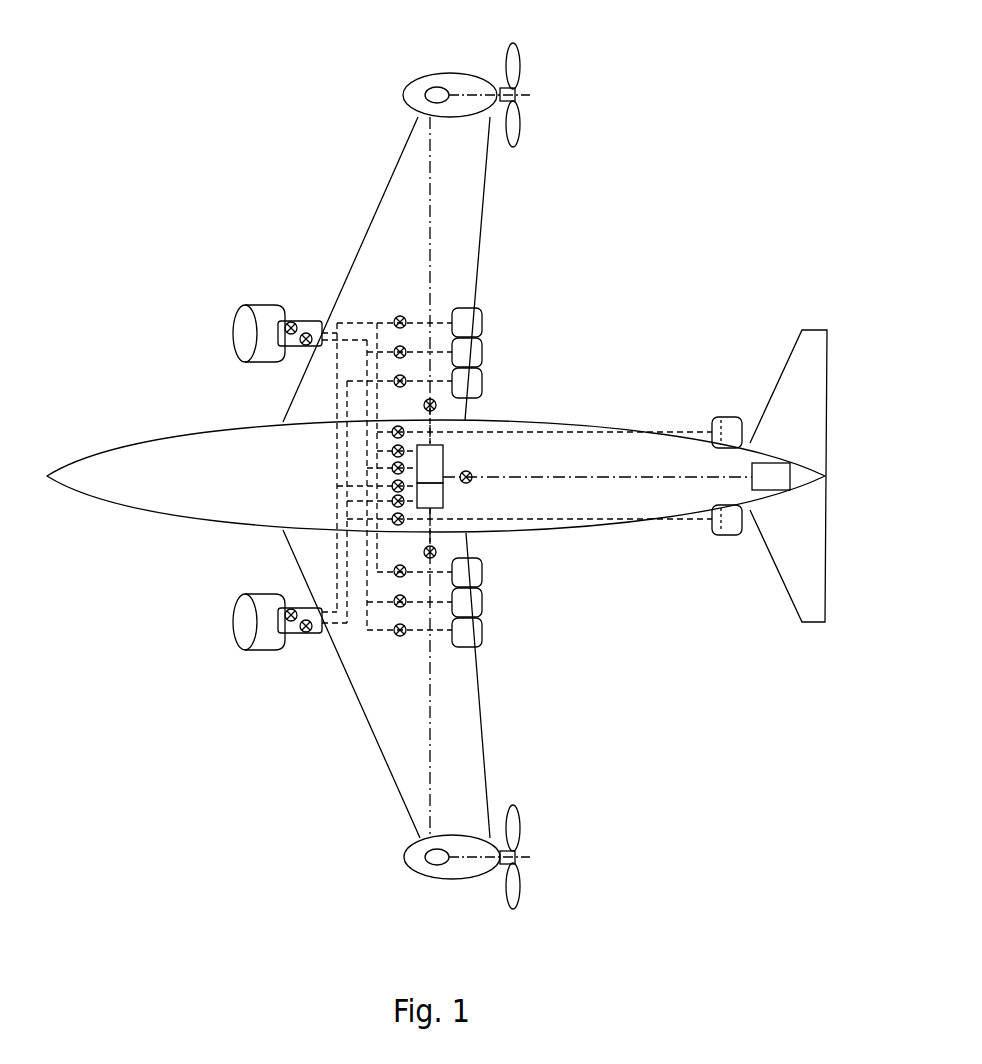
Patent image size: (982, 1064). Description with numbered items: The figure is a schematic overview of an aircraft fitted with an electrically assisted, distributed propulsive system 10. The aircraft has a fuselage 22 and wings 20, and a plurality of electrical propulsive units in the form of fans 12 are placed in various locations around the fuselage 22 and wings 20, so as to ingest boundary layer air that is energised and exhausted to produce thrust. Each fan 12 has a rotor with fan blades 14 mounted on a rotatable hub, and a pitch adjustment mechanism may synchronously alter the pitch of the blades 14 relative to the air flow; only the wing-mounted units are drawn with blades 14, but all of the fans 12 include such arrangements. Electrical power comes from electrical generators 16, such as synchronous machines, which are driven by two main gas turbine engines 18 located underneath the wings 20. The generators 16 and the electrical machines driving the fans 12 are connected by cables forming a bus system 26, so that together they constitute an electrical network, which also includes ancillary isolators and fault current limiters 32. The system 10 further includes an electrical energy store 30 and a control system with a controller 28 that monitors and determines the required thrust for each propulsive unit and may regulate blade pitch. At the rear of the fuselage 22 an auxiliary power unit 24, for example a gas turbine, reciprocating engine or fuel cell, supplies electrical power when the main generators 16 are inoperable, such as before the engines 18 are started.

The electrically assisted propulsive system 10 is at (700, 106).
The fans 12 is at (550, 148).
The fan blades 14 is at (508, 78).
The electrical generators 16 is at (305, 318).
The gas turbine engines 18 is at (233, 330).
The wings 20 is at (400, 192).
The fuselage 22 is at (128, 489).
The auxiliary power unit 24 is at (770, 462).
The bus system 26 is at (458, 450).
The controller 28 is at (445, 487).
The electrical energy store 30 is at (445, 458).
The fault current limiters 32 is at (398, 308).